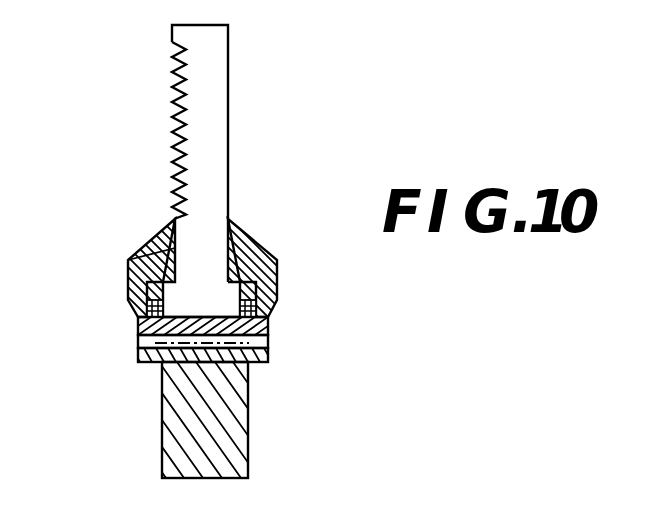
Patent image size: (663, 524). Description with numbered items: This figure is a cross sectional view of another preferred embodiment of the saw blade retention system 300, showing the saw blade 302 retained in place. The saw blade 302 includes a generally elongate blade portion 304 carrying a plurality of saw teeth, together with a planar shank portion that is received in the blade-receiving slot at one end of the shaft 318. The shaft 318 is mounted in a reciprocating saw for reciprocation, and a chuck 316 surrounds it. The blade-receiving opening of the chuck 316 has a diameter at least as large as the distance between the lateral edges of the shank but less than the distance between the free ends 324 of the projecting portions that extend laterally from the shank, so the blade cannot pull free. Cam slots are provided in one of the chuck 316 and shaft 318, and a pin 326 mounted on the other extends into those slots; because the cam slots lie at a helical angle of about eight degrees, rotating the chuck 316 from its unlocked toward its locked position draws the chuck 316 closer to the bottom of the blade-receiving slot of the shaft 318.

The saw blade retention system 300 is at (199, 284).
The saw blade 302 is at (240, 57).
The blade portion 304 is at (173, 120).
The chuck 316 is at (277, 298).
The shaft 318 is at (248, 400).
The free ends of the projecting portions 324 is at (128, 281).
The pin 326 is at (140, 338).